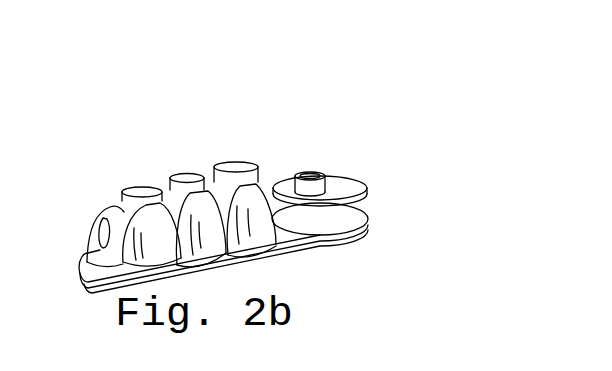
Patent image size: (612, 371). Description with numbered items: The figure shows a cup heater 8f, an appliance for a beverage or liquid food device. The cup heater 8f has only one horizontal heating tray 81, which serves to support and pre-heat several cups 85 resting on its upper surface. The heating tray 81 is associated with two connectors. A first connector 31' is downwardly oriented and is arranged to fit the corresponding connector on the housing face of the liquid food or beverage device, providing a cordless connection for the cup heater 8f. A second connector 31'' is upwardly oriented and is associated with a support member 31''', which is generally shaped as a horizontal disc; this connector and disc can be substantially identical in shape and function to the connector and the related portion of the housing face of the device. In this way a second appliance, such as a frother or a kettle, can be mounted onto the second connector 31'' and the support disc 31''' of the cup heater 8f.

The cup heater 8f is at (224, 167).
The horizontal heating tray 81 is at (95, 258).
The cups 85 is at (172, 187).
The first connector 31' is at (344, 235).
The second connector 31'' is at (326, 144).
The support member 31''' is at (333, 166).